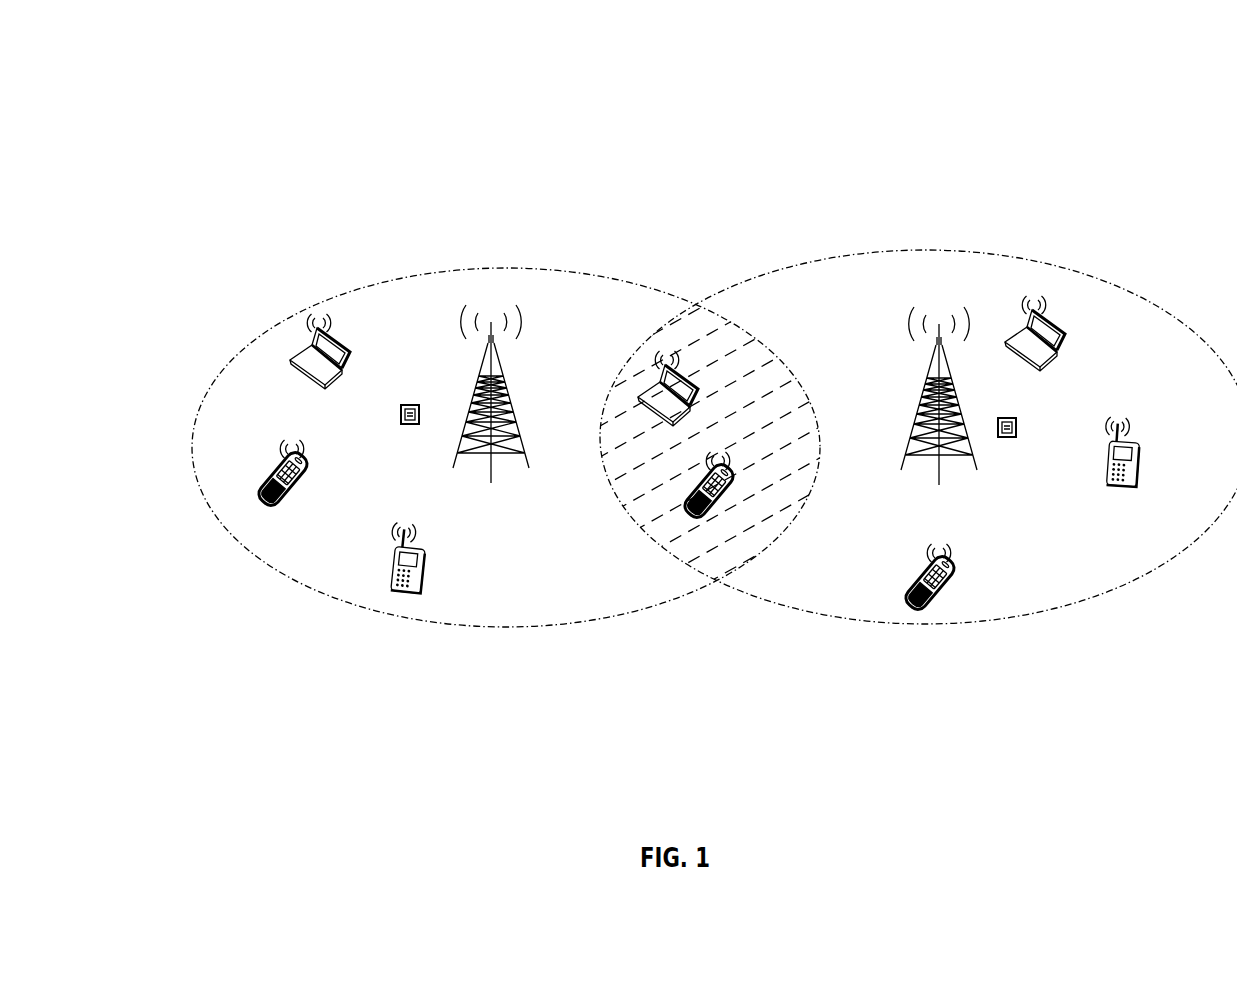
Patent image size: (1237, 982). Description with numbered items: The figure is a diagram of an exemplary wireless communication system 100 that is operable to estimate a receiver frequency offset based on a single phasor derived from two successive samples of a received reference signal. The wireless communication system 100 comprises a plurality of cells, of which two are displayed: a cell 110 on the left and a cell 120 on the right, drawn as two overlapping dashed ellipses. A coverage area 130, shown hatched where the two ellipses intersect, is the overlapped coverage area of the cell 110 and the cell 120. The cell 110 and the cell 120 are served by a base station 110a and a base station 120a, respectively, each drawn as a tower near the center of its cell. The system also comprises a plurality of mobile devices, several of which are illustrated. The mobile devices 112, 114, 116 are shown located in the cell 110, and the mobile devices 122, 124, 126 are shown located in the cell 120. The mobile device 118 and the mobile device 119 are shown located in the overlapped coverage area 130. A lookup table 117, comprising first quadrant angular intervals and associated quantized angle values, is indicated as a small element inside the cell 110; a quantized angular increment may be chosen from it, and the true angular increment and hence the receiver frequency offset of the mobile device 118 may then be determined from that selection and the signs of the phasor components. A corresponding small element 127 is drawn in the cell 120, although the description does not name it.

The wireless communication system 100 is at (428, 78).
The cell 110 is at (602, 271).
The base station 110a is at (518, 322).
The mobile device 112 is at (352, 349).
The mobile device 114 is at (310, 474).
The mobile device 116 is at (427, 571).
The lookup table 117 is at (424, 414).
The mobile device 118 is at (735, 496).
The mobile device 119 is at (700, 412).
The cell 120 is at (985, 257).
The base station 120a is at (972, 337).
The mobile device 122 is at (1066, 330).
The mobile device 124 is at (1140, 470).
The mobile device 126 is at (957, 573).
The device in second cell 127 is at (1018, 432).
The coverage area 130 is at (690, 306).